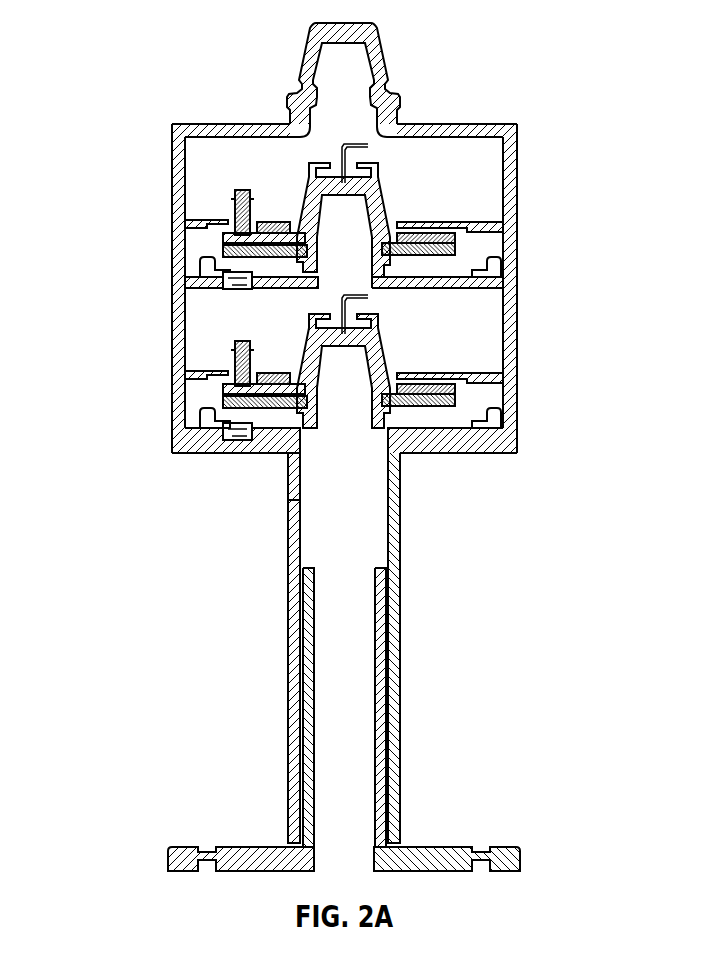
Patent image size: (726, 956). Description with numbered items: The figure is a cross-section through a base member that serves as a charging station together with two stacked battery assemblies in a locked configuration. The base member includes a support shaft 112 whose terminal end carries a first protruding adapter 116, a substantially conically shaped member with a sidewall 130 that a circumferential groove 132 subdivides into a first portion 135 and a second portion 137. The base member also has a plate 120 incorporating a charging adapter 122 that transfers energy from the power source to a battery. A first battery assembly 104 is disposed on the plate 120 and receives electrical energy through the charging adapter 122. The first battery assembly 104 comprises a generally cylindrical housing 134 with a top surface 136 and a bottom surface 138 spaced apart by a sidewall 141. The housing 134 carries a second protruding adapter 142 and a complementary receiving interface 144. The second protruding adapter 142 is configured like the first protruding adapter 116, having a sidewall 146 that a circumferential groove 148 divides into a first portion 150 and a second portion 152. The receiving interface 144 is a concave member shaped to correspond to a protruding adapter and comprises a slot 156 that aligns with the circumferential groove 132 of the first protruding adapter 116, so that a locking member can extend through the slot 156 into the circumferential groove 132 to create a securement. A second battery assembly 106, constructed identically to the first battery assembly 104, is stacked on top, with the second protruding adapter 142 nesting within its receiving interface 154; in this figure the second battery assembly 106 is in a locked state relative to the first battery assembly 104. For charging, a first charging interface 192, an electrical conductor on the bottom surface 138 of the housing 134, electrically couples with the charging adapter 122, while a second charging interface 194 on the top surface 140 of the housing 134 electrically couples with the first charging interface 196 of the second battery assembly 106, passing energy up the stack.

The first battery assembly 104 is at (628, 219).
The second battery assembly 106 is at (512, 54).
The support shaft 112 is at (305, 627).
The first protruding adapter 116 is at (240, 397).
The plate 120 is at (305, 440).
The charging adapter 122 is at (290, 435).
The sidewall 130 is at (290, 370).
The circumferential groove 132 is at (300, 405).
The housing 134 is at (512, 398).
The first portion 135 is at (378, 358).
The top surface 136 is at (222, 283).
The second portion 137 is at (442, 447).
The bottom surface 138 is at (270, 442).
The top surface 140 is at (495, 283).
The sidewall 141 is at (177, 388).
The second protruding adapter 142 is at (300, 180).
The receiving interface 144 is at (245, 380).
The sidewall 146 is at (384, 222).
The circumferential groove 148 is at (303, 255).
The first portion 150 is at (352, 180).
The second portion 152 is at (450, 246).
The receiving interface 154 is at (322, 166).
The slot 156 is at (455, 391).
The first charging interface 192 is at (232, 433).
The second charging interface 194 is at (200, 272).
The first charging interface 196 is at (223, 221).